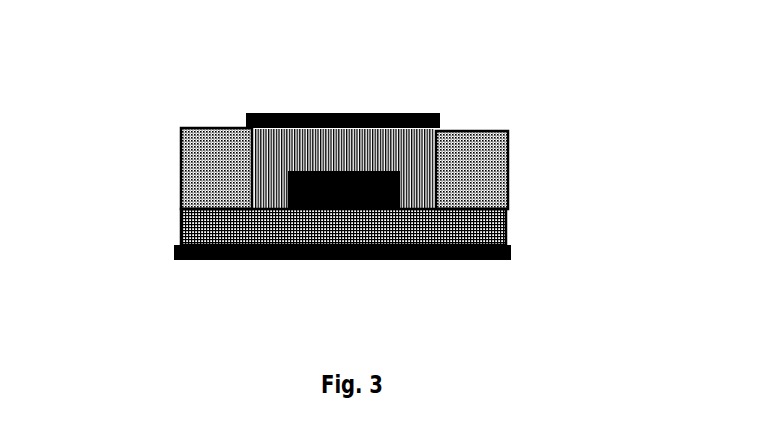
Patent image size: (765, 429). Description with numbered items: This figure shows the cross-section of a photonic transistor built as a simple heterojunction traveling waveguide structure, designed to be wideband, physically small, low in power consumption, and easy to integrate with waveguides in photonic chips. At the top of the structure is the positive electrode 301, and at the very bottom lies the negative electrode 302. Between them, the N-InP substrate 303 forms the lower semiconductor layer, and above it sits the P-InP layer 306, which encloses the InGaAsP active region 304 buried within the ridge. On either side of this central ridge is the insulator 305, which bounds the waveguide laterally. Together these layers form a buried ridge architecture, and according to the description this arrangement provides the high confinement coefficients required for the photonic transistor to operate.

The positive electrode 301 is at (398, 107).
The negative electrode 302 is at (433, 252).
The N-InP substrate 303 is at (500, 213).
The InGaAsP active region 304 is at (280, 175).
The insulator 305 is at (173, 160).
The P-InP layer 306 is at (408, 150).